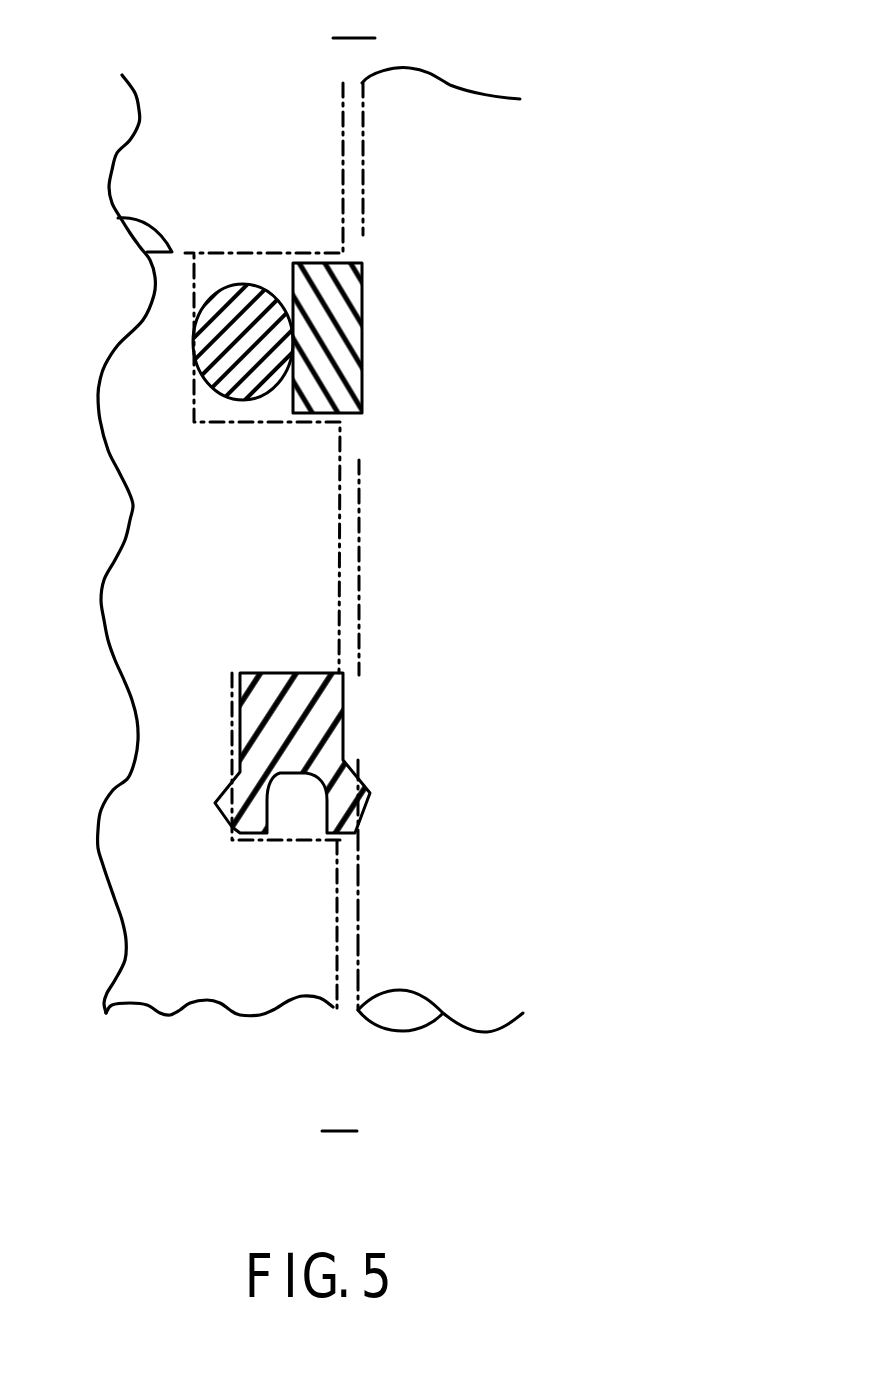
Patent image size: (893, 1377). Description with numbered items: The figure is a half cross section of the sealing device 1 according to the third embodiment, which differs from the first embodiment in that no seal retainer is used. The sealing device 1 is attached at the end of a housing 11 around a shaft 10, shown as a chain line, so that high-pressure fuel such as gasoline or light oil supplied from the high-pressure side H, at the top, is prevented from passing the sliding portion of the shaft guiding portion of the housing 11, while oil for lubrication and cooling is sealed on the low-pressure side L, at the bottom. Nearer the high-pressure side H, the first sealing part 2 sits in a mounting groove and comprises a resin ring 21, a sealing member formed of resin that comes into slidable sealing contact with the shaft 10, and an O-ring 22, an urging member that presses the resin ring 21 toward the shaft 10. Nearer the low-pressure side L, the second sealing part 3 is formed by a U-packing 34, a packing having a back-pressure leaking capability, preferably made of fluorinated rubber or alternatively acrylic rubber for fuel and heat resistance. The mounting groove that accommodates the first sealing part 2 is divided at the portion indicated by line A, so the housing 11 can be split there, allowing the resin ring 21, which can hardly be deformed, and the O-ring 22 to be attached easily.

The sealing device 1 is at (160, 487).
The first sealing part 2 is at (266, 336).
The second sealing part 3 is at (297, 753).
The shaft 10 is at (425, 510).
The housing 11 is at (228, 135).
The resin ring 21 is at (345, 326).
The O-ring 22 is at (237, 337).
The U-packing 34 is at (308, 758).
The line A is at (122, 218).
The high-pressure side H is at (354, 19).
The low-pressure side L is at (339, 1105).